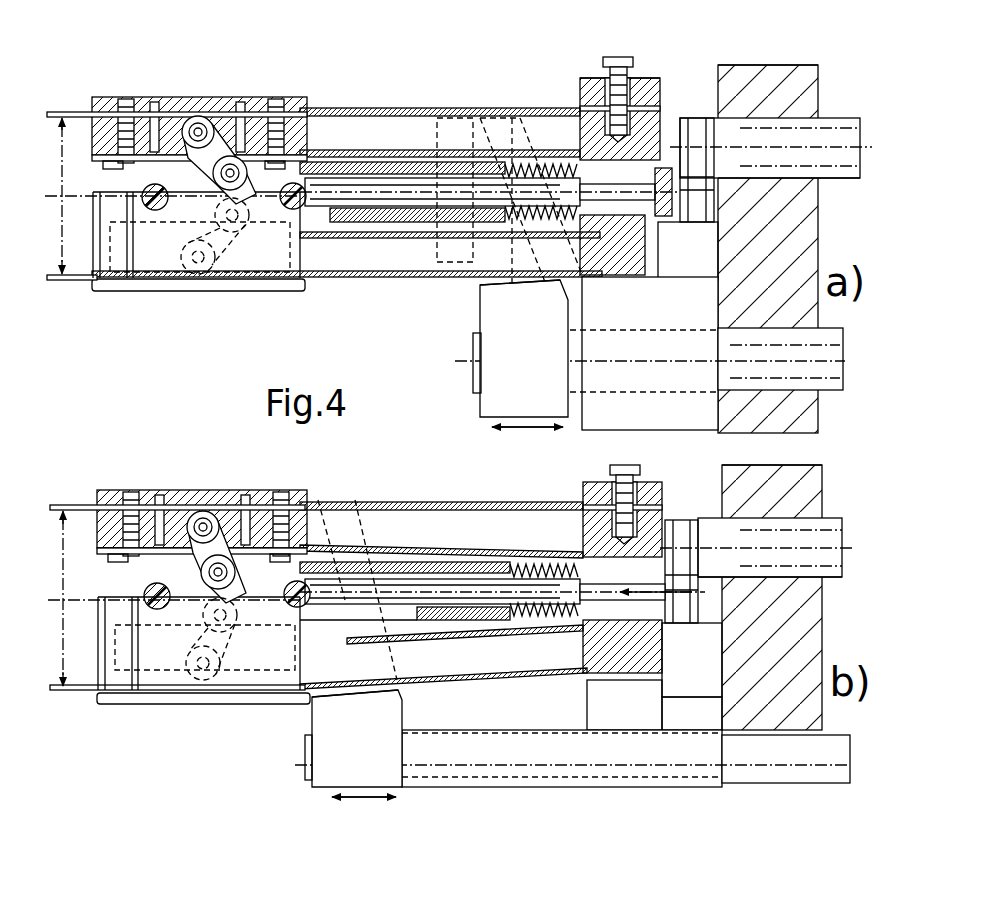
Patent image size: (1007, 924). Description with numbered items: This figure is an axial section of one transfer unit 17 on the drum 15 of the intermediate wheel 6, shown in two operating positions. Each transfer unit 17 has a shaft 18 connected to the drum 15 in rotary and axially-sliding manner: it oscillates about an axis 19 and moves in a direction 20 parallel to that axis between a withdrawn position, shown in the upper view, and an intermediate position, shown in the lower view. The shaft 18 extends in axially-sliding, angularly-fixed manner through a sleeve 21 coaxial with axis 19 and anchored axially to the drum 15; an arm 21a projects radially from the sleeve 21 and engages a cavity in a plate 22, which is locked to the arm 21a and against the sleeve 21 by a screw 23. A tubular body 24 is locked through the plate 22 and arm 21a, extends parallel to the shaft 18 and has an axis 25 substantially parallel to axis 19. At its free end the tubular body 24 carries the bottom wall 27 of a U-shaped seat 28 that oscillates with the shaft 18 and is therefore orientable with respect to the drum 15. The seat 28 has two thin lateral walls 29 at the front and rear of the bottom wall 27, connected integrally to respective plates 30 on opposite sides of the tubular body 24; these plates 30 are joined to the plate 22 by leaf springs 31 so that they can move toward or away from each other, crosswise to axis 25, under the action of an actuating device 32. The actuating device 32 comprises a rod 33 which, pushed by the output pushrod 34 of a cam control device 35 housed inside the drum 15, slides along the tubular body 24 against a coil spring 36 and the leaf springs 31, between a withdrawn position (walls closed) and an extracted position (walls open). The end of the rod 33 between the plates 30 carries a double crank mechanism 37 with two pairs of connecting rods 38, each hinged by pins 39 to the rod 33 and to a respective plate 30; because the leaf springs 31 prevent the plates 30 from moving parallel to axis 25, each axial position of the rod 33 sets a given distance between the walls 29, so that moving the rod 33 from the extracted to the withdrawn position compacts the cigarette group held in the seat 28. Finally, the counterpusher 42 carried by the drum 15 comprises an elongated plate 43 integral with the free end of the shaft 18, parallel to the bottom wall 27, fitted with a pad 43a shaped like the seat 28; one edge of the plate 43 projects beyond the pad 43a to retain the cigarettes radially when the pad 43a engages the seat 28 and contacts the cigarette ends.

The intermediate wheel 6 is at (810, 64).
The drum 15 is at (790, 96).
The transfer unit 17 is at (682, 86).
The shaft 18 is at (573, 406).
The axis 19 is at (478, 362).
The direction 20 is at (540, 428).
The sleeve 21 is at (676, 306).
The arm 21a is at (624, 270).
The plate 22 is at (645, 90).
The screw 23 is at (606, 58).
The tubular body 24 is at (416, 224).
The axis 25 is at (60, 199).
The bottom wall 27 is at (152, 256).
The seat 28 is at (78, 162).
The lateral wall 29 is at (75, 111).
The plate 30 is at (98, 98).
The leaf spring 31 is at (383, 146).
The actuating device 32 is at (672, 127).
The rod 33 is at (640, 206).
The output pushrod 34 is at (824, 120).
The cam control device 35 is at (832, 182).
The coil spring 36 is at (536, 165).
The double crank mechanism 37 is at (236, 270).
The connecting rod 38 is at (228, 160).
The pin 39 is at (196, 120).
The counterpusher 42 is at (478, 298).
The elongated plate 43 is at (451, 118).
The pad 43a is at (486, 118).